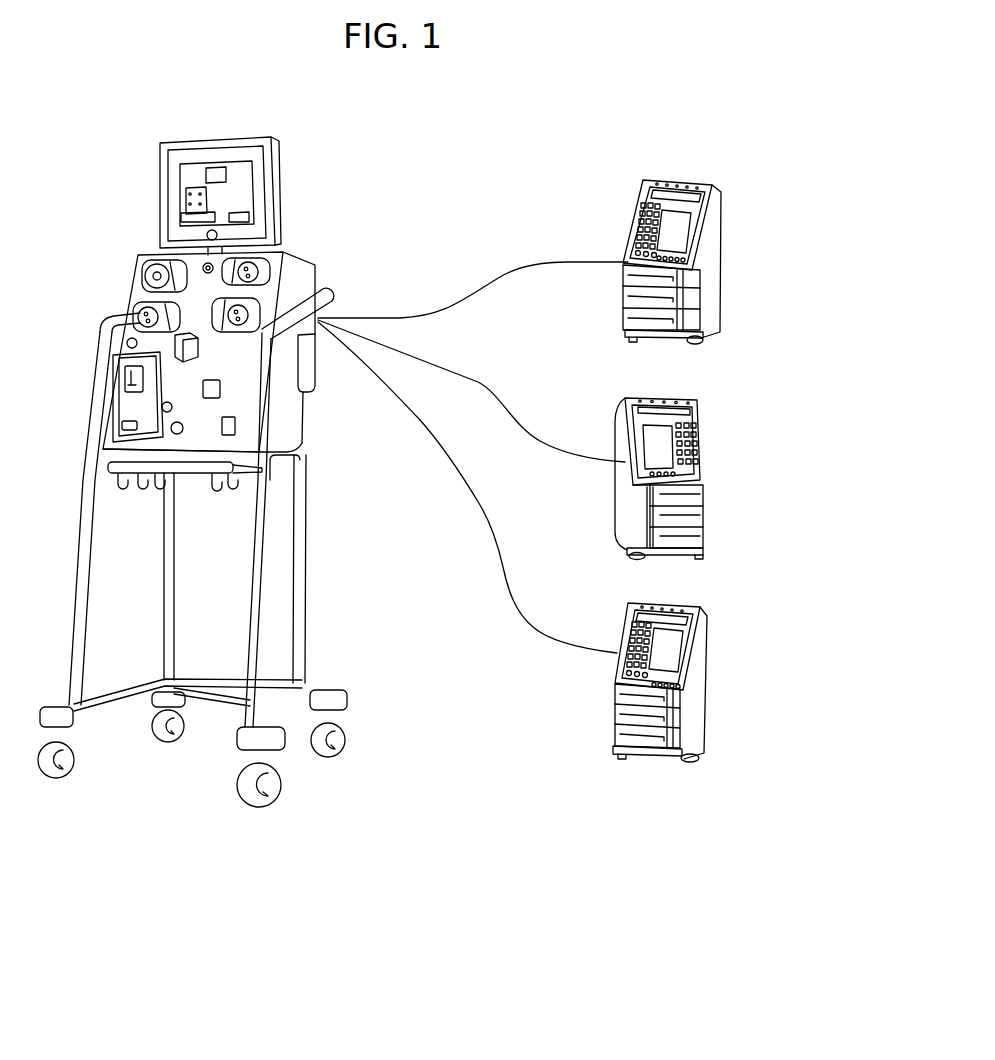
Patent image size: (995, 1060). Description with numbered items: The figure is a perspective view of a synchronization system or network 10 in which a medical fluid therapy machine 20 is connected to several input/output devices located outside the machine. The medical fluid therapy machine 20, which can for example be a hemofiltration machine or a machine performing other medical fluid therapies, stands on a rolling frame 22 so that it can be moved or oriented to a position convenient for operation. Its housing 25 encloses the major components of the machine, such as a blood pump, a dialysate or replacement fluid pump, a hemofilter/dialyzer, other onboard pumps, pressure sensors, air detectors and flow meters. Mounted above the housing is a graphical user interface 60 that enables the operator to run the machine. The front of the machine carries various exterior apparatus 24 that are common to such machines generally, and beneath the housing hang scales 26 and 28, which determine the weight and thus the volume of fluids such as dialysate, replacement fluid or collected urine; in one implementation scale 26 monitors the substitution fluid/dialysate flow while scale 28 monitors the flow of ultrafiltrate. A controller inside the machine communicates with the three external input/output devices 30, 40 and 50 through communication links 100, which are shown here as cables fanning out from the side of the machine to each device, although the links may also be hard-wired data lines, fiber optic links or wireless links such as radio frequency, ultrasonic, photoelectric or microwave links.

The synchronization system or network 10 is at (524, 99).
The medical fluid therapy machine 20 is at (187, 99).
The rolling frame 22 is at (88, 562).
The exterior apparatus 24 is at (133, 411).
The housing 25 is at (337, 305).
The scale 26 is at (227, 494).
The scale 28 is at (127, 488).
The external input/output device 30 is at (668, 180).
The external input/output device 40 is at (707, 448).
The external input/output device 50 is at (660, 755).
The graphical user interface 60 is at (277, 193).
The communication links 100 is at (476, 294).